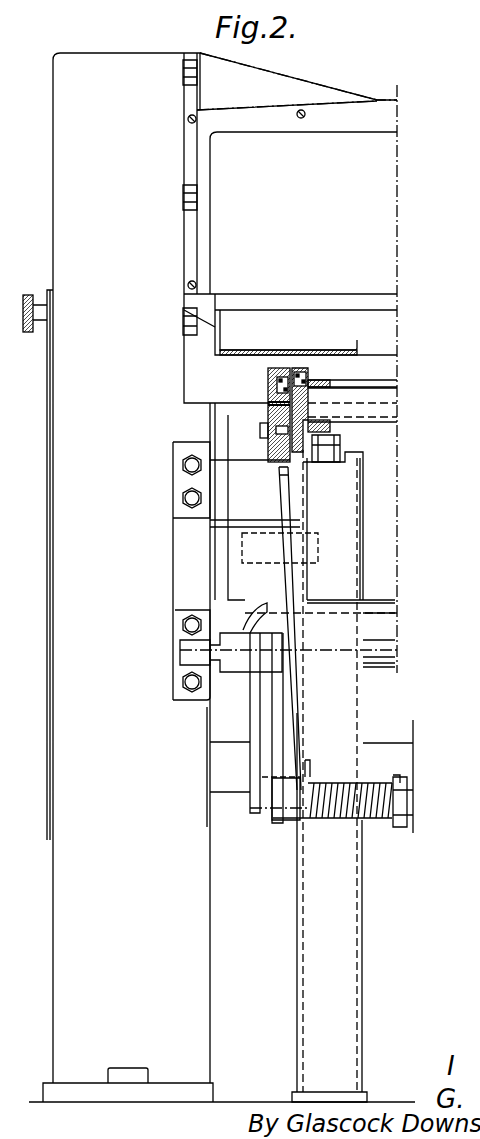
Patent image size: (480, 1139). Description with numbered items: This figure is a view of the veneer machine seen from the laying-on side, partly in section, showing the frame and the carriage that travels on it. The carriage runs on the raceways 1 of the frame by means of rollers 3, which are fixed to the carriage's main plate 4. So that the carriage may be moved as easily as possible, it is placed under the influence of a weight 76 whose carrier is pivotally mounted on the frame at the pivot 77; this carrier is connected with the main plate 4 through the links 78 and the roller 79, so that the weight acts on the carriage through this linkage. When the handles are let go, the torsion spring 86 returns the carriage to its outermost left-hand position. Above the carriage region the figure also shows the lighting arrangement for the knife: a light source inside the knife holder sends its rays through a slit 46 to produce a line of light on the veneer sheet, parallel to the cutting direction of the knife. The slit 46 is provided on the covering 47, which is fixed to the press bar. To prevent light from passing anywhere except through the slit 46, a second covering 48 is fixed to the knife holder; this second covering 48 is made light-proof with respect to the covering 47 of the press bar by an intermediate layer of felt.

The raceways 1 is at (340, 385).
The rollers 3 is at (300, 370).
The main plate 4 is at (313, 375).
The slit 46 is at (304, 386).
The covering 47 is at (234, 322).
The second covering 48 is at (217, 240).
The weight 76 is at (245, 546).
The pivot 77 is at (212, 662).
The links 78 is at (280, 487).
The roller 79 is at (287, 368).
The torsion spring 86 is at (378, 820).